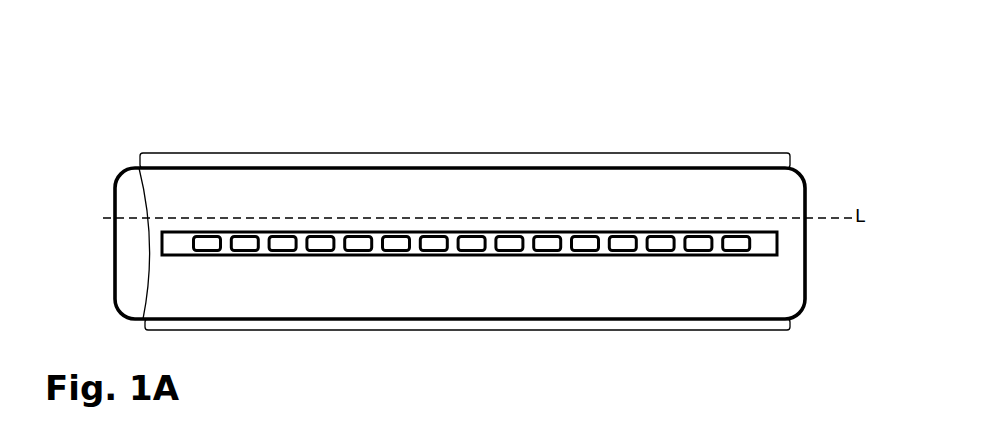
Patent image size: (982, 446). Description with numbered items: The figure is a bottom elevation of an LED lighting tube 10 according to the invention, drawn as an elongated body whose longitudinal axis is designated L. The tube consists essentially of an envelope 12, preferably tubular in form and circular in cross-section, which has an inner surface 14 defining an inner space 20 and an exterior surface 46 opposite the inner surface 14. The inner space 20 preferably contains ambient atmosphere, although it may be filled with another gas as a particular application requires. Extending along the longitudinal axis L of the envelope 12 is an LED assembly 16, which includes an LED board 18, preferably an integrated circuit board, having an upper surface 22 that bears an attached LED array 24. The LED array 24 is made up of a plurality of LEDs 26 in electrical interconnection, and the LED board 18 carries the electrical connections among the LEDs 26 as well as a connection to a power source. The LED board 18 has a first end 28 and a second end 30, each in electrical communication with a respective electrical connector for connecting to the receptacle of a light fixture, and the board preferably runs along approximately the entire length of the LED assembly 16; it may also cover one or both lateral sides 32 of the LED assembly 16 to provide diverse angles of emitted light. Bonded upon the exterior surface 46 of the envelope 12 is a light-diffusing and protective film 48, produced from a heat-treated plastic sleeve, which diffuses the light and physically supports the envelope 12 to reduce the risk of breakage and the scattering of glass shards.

The LED lighting tube 10 is at (148, 100).
The envelope 12 is at (803, 182).
The inner surface 14 is at (137, 316).
The LED assembly 16 is at (779, 252).
The LED board 18 is at (605, 257).
The inner space 20 is at (767, 205).
The upper surface 22 is at (533, 252).
The LED array 24 is at (392, 244).
The LEDs 26 is at (281, 243).
The first end 28 is at (178, 247).
The second end 30 is at (766, 244).
The lateral sides 32 is at (652, 228).
The exterior surface 46 is at (436, 167).
The light-diffusing and protective film 48 is at (515, 158).